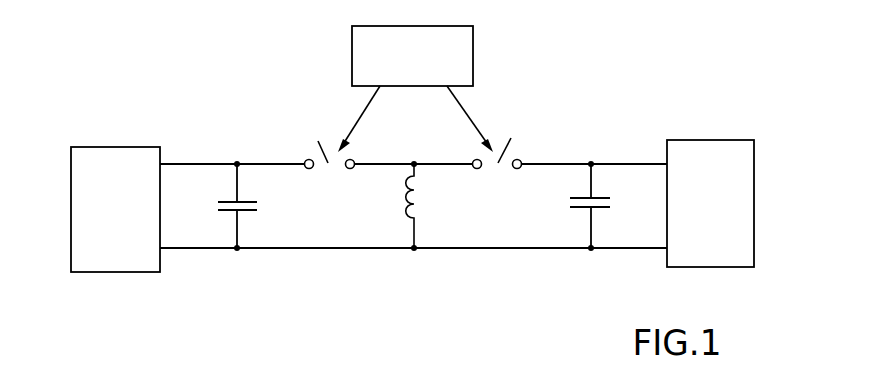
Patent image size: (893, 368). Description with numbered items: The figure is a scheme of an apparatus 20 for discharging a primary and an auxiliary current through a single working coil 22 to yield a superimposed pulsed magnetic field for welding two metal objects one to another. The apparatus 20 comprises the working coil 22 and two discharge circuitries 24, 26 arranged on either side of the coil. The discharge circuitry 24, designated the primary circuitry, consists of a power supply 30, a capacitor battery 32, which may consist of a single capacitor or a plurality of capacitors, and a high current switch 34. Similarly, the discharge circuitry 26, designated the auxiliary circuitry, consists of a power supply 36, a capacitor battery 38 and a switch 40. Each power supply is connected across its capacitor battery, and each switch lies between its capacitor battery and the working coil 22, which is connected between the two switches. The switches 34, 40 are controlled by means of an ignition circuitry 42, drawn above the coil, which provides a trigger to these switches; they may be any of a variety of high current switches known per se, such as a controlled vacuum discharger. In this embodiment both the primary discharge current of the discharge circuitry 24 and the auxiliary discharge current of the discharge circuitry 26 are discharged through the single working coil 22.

The apparatus 20 is at (626, 72).
The working coil 22 is at (410, 215).
The discharge circuitry 24 is at (310, 213).
The discharge circuitry 26 is at (497, 210).
The power supply 30 is at (118, 147).
The capacitor battery 32 is at (222, 207).
The high current switch 34 is at (318, 141).
The power supply 36 is at (754, 172).
The capacitor battery 38 is at (600, 197).
The switch 40 is at (511, 138).
The ignition circuitry 42 is at (473, 62).